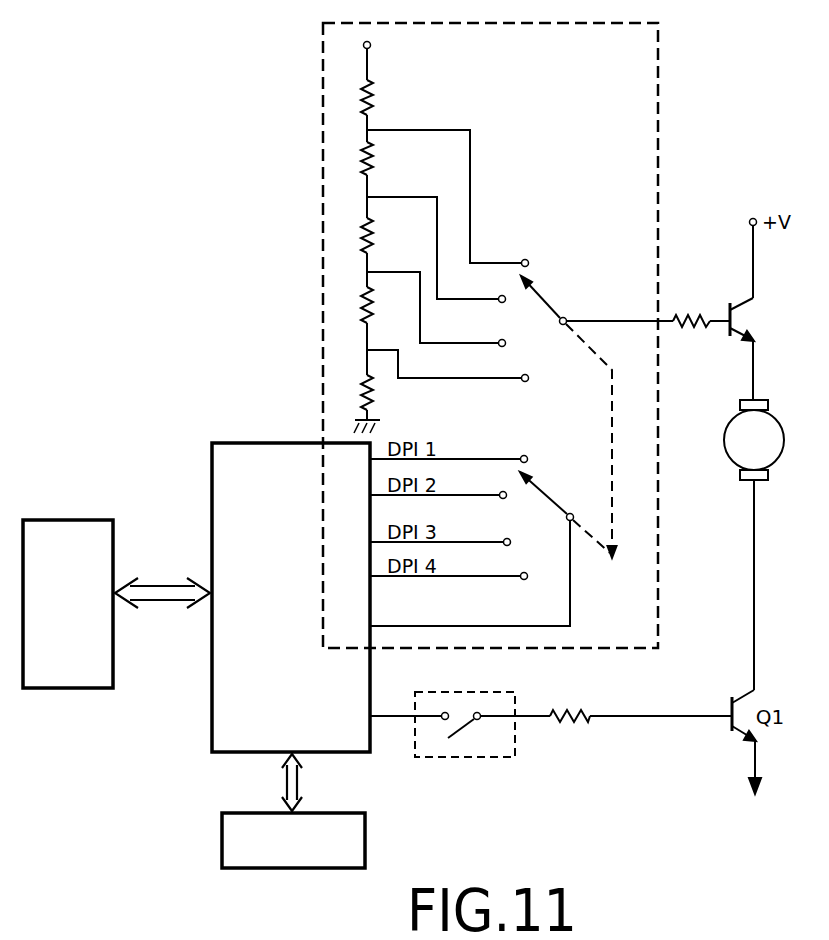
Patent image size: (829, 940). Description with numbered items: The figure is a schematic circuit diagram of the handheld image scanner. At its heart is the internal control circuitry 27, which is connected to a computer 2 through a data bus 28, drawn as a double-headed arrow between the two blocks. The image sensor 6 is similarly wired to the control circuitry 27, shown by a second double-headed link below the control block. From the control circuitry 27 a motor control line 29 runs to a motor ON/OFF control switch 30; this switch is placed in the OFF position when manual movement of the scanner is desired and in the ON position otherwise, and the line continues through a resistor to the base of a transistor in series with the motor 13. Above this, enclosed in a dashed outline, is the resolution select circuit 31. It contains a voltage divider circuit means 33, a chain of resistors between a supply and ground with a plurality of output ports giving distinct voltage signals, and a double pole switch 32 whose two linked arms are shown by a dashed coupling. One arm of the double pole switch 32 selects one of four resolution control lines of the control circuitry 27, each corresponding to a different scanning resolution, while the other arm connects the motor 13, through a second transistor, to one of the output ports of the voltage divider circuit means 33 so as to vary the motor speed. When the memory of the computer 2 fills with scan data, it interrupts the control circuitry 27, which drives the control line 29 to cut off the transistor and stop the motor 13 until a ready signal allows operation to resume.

The computer 2 is at (80, 675).
The image sensor 6 is at (228, 846).
The motor 13 is at (737, 453).
The control circuitry 27 is at (213, 748).
The data bus 28 is at (165, 608).
The motor control line 29 is at (392, 718).
The motor ON/OFF control switch 30 is at (515, 740).
The resolution select circuit 31 is at (623, 83).
The double pole switch 32 is at (595, 542).
The voltage divider circuit means 33 is at (447, 117).